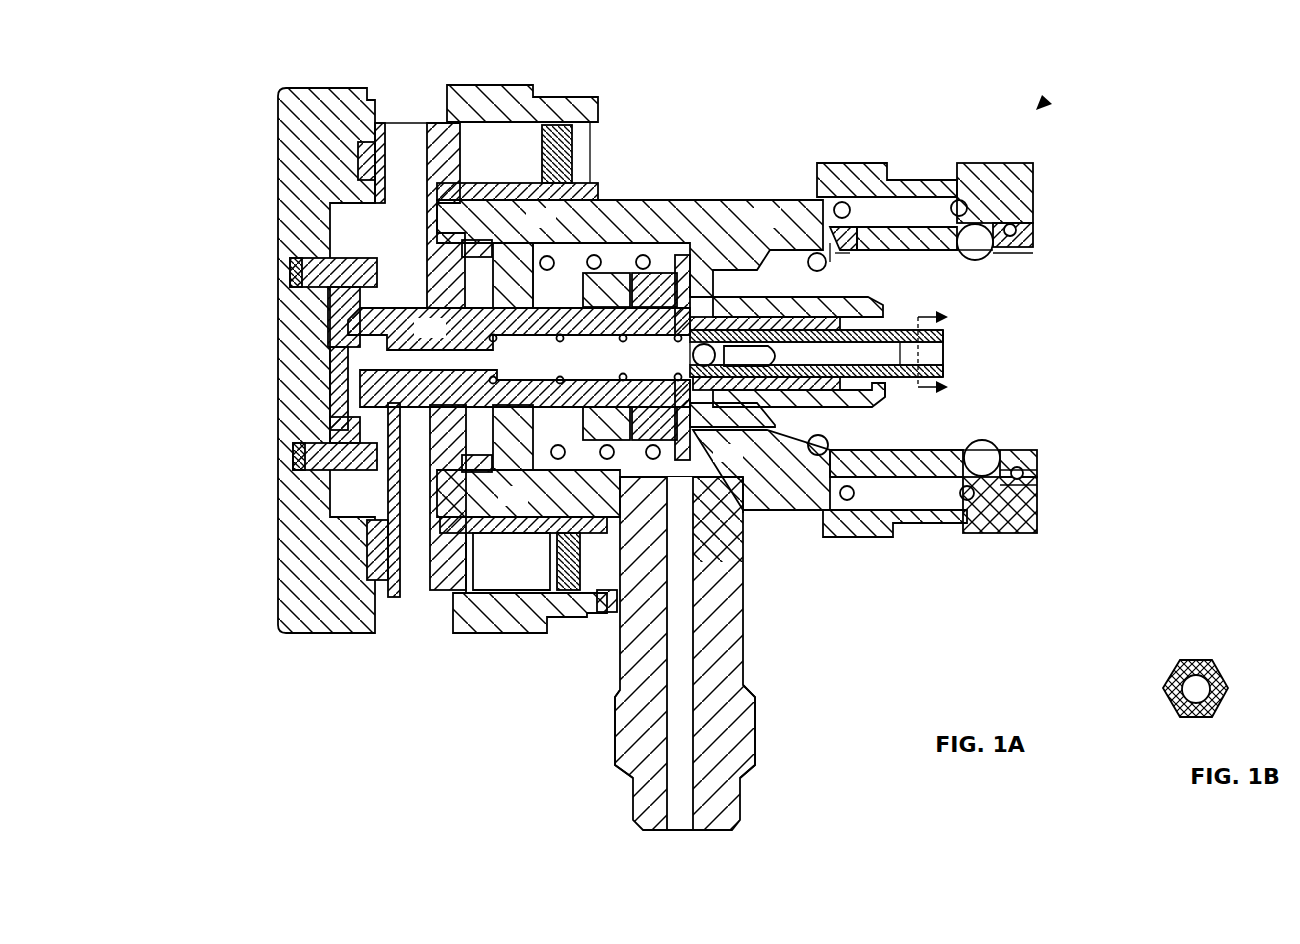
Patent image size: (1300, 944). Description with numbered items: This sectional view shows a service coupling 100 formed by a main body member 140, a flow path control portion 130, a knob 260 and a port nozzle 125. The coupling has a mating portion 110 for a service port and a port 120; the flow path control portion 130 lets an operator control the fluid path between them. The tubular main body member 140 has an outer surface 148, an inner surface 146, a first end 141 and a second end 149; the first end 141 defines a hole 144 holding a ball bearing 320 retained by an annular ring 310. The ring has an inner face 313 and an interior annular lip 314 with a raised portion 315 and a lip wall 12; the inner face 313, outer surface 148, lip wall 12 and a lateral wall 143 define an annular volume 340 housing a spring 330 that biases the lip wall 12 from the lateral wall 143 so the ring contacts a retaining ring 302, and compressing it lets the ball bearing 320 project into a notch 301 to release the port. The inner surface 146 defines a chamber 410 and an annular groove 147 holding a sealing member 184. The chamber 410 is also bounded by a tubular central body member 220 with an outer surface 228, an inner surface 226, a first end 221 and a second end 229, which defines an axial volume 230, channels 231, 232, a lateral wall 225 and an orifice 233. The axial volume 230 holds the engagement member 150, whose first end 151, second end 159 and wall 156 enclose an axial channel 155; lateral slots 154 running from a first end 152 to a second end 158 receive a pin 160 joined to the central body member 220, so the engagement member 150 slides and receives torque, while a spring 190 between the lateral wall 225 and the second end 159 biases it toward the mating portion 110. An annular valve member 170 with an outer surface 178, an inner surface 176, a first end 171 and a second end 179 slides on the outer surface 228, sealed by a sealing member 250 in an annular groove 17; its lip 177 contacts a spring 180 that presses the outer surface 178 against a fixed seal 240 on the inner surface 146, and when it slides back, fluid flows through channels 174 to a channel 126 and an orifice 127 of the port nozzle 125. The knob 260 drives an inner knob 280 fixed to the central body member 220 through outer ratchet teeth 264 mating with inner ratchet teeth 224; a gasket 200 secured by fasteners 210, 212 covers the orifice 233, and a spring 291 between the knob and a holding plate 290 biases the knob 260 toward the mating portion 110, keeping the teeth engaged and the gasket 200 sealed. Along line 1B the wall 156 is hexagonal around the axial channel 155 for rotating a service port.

In FIG. 1A, the lip wall 12 is at (1022, 508).
In FIG. 1A, the annular groove 17 is at (625, 412).
In FIG. 1A, the service coupling 100 is at (1046, 104).
In FIG. 1A, the mating portion 110 is at (990, 468).
In FIG. 1A, the port 120 is at (700, 831).
In FIG. 1A, the port nozzle 125 is at (733, 667).
In FIG. 1A, the channel 126 is at (677, 660).
In FIG. 1A, the orifice 127 is at (682, 817).
In FIG. 1A, the flow path control portion 130 is at (276, 200).
In FIG. 1A, the main body member 140 is at (528, 226).
In FIG. 1A, the first end 141 is at (1027, 231).
In FIG. 1A, the lateral wall 143 is at (826, 254).
In FIG. 1A, the hole 144 is at (998, 253).
In FIG. 1A, the inner surface 146 is at (968, 258).
In FIG. 1A, the annular groove 147 is at (836, 252).
In FIG. 1A, the outer surface 148 is at (716, 198).
In FIG. 1A, the second end 149 is at (470, 200).
In FIG. 1A, the engagement member 150 is at (940, 376).
In FIG. 1B, the engagement member 150 is at (1188, 660).
In FIG. 1A, the first end 151 is at (946, 331).
In FIG. 1A, the first end 152 is at (785, 355).
In FIG. 1A, the lateral slots 154 is at (732, 365).
In FIG. 1A, the axial channel 155 is at (897, 355).
In FIG. 1B, the axial channel 155 is at (1200, 697).
In FIG. 1A, the wall 156 is at (889, 329).
In FIG. 1B, the wall 156 is at (1214, 663).
In FIG. 1A, the second end 158 is at (692, 364).
In FIG. 1A, the second end 159 is at (694, 353).
In FIG. 1A, the pin 160 is at (683, 255).
In FIG. 1A, the annular valve member 170 is at (862, 410).
In FIG. 1A, the first end 171 is at (888, 395).
In FIG. 1A, the channels 174 is at (710, 297).
In FIG. 1A, the inner surface 176 is at (733, 603).
In FIG. 1A, the lip 177 is at (748, 528).
In FIG. 1A, the outer surface 178 is at (583, 542).
In FIG. 1A, the second end 179 is at (600, 420).
In FIG. 1A, the spring 180 is at (600, 535).
In FIG. 1A, the sealing member 184 is at (829, 257).
In FIG. 1A, the spring 190 is at (643, 250).
In FIG. 1A, the gasket 200 is at (300, 386).
In FIG. 1A, the fastener 210 is at (293, 452).
In FIG. 1A, the fastener 212 is at (290, 266).
In FIG. 1A, the central body member 220 is at (443, 337).
In FIG. 1A, the first end 221 is at (855, 300).
In FIG. 1A, the inner ratchet teeth 224 is at (380, 125).
In FIG. 1A, the lateral wall 225 is at (586, 351).
In FIG. 1A, the inner surface 226 is at (597, 255).
In FIG. 1A, the outer surface 228 is at (588, 272).
In FIG. 1A, the second end 229 is at (335, 335).
In FIG. 1A, the axial volume 230 is at (465, 365).
In FIG. 1A, the channel 231 is at (682, 394).
In FIG. 1A, the channel 232 is at (664, 272).
In FIG. 1A, the orifice 233 is at (480, 372).
In FIG. 1A, the fixed seal 240 is at (746, 516).
In FIG. 1A, the sealing member 250 is at (597, 470).
In FIG. 1A, the knob 260 is at (302, 130).
In FIG. 1A, the outer ratchet teeth 264 is at (368, 143).
In FIG. 1A, the inner knob 280 is at (445, 133).
In FIG. 1A, the holding plate 290 is at (572, 120).
In FIG. 1A, the spring 291 is at (546, 128).
In FIG. 1A, the notch 301 is at (1013, 226).
In FIG. 1A, the retaining ring 302 is at (1033, 472).
In FIG. 1A, the annular ring 310 is at (1013, 533).
In FIG. 1A, the inner face 313 is at (930, 512).
In FIG. 1A, the interior annular lip 314 is at (1007, 476).
In FIG. 1A, the raised portion 315 is at (1020, 477).
In FIG. 1A, the ball bearing 320 is at (979, 236).
In FIG. 1A, the spring 330 is at (850, 497).
In FIG. 1A, the annular volume 340 is at (879, 222).
In FIG. 1A, the chamber 410 is at (985, 340).
In FIG. 1A, the section line 1B is at (934, 356).